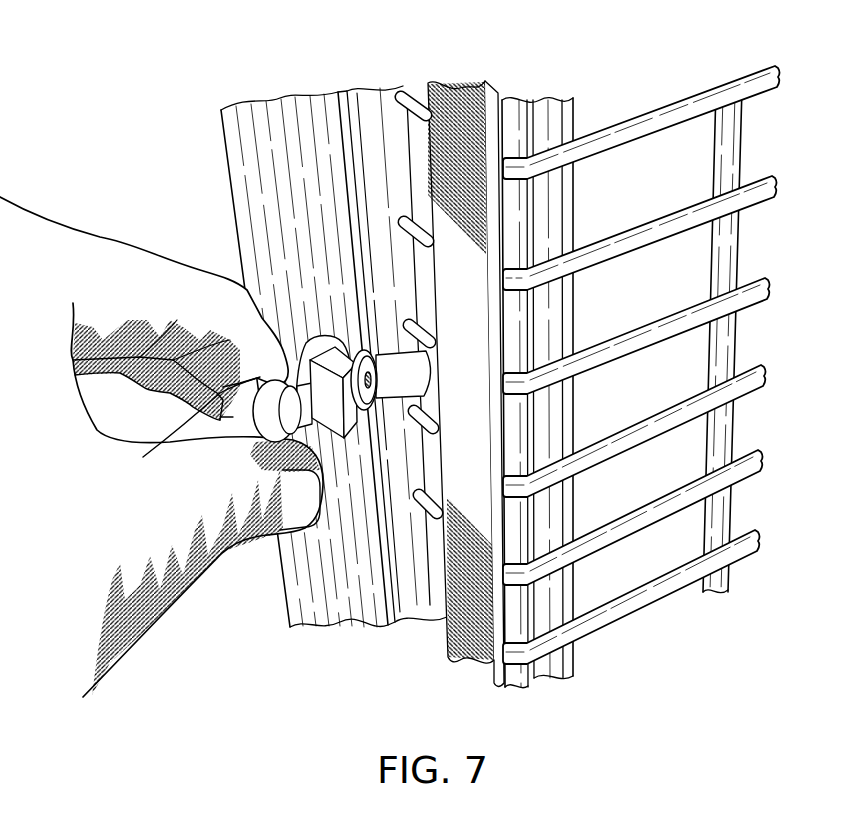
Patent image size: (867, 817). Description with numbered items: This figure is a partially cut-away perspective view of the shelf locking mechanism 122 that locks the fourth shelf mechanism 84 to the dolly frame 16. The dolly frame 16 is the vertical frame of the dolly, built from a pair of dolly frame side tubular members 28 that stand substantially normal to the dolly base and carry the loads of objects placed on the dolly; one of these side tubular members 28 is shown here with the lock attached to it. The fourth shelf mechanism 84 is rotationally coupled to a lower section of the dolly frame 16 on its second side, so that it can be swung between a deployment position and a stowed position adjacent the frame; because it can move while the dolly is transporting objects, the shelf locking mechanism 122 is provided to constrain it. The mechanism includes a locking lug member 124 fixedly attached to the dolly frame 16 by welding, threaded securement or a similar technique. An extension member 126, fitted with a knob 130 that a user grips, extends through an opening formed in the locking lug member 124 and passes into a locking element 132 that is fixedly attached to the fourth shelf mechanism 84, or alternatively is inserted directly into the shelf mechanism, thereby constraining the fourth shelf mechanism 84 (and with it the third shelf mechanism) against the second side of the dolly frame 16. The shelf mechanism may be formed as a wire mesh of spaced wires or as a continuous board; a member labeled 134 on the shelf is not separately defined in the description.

The dolly frame 16 is at (228, 143).
The dolly frame side tubular member 28 is at (292, 612).
The fourth shelf mechanism 84 is at (617, 120).
The shelf locking mechanism 122 is at (384, 338).
The locking lug member 124 is at (363, 425).
The extension member 126 is at (322, 424).
The knob 130 is at (172, 440).
The locking element 132 is at (436, 408).
The rail 134 is at (663, 240).